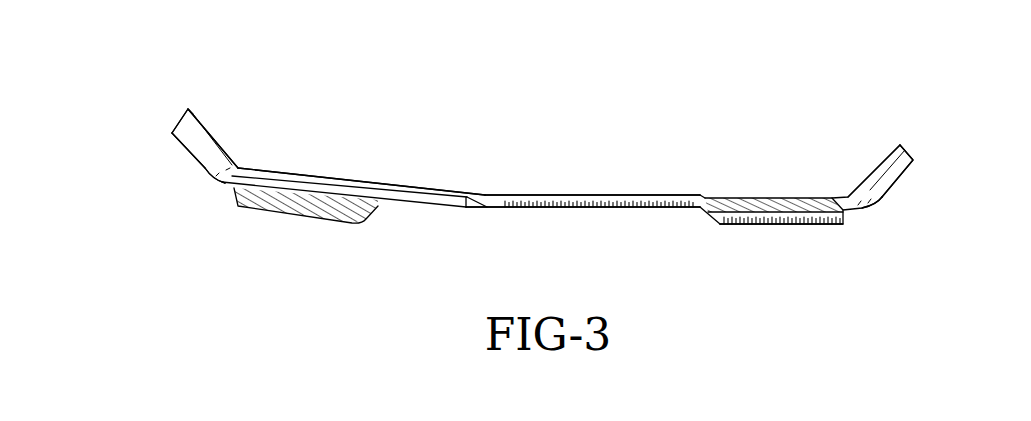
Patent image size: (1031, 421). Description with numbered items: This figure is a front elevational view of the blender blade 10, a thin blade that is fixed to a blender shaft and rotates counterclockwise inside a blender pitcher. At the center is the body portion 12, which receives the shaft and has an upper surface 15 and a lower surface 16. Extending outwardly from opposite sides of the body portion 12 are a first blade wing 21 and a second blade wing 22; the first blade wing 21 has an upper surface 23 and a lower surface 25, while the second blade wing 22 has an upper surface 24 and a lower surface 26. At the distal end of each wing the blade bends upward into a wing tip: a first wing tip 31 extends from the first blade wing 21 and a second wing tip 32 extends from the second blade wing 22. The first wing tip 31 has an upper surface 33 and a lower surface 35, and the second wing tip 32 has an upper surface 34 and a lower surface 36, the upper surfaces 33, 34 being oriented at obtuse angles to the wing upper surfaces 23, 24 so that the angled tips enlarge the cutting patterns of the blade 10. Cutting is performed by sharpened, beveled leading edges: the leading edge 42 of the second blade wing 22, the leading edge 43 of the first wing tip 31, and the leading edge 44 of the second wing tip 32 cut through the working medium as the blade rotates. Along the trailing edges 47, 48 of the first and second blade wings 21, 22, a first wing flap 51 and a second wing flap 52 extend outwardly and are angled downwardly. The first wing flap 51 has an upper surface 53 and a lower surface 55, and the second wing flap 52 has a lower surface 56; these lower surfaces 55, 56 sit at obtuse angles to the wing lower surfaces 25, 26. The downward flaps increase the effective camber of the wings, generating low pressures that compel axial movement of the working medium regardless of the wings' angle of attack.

The blender blade 10 is at (508, 138).
The body portion 12 is at (576, 190).
The upper surface 15 is at (648, 193).
The lower surface 16 is at (672, 208).
The first blade wing 21 is at (766, 190).
The second blade wing 22 is at (298, 163).
The upper surface 23 is at (806, 196).
The upper surface 24 is at (345, 173).
The lower surface 25 is at (615, 210).
The lower surface 26 is at (390, 204).
The first wing tip 31 is at (918, 175).
The second wing tip 32 is at (168, 104).
The upper surface 33 is at (893, 147).
The upper surface 34 is at (232, 154).
The lower surface 35 is at (893, 201).
The lower surface 36 is at (200, 168).
The leading edge 42 is at (420, 184).
The leading edge 43 is at (874, 174).
The leading edge 44 is at (199, 118).
The trailing edge 47 is at (855, 206).
The trailing edge 48 is at (214, 188).
The first wing flap 51 is at (760, 230).
The second wing flap 52 is at (267, 212).
The upper surface 53 is at (716, 196).
The lower surface 55 is at (823, 226).
The lower surface 56 is at (313, 208).